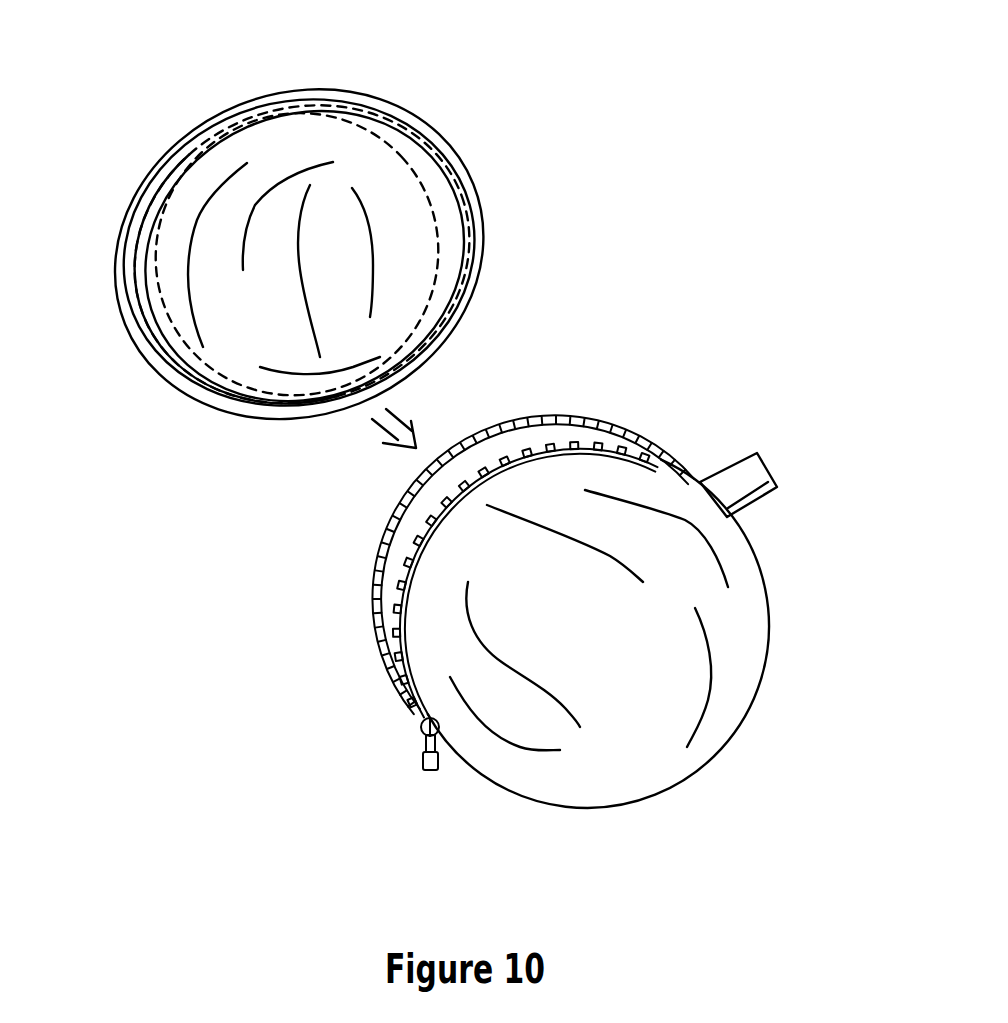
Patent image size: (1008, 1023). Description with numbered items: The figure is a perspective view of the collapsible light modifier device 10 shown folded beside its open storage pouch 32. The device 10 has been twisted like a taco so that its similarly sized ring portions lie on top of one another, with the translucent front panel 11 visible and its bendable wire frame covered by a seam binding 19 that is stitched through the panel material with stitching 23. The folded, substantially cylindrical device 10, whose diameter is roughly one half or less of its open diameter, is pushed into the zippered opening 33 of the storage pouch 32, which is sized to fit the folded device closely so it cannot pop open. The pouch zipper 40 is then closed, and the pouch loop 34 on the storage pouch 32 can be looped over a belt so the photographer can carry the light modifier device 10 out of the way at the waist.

The light modifier device 10 is at (452, 131).
The translucent front panel 11 is at (263, 312).
The seam binding 19 is at (470, 212).
The stitching 23 is at (177, 327).
The light modifier storage pouch 32 is at (707, 435).
The zippered opening 33 is at (493, 453).
The pouch loop 34 is at (760, 483).
The pouch zipper 40 is at (405, 645).